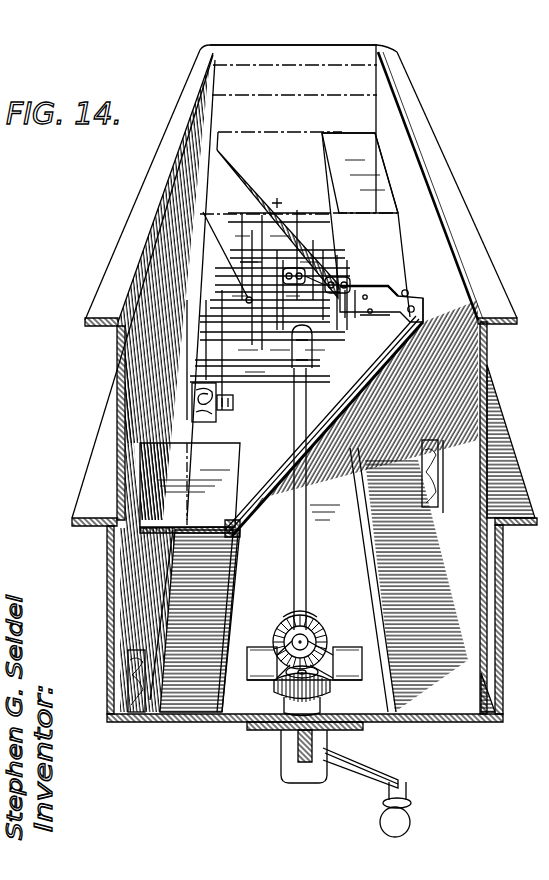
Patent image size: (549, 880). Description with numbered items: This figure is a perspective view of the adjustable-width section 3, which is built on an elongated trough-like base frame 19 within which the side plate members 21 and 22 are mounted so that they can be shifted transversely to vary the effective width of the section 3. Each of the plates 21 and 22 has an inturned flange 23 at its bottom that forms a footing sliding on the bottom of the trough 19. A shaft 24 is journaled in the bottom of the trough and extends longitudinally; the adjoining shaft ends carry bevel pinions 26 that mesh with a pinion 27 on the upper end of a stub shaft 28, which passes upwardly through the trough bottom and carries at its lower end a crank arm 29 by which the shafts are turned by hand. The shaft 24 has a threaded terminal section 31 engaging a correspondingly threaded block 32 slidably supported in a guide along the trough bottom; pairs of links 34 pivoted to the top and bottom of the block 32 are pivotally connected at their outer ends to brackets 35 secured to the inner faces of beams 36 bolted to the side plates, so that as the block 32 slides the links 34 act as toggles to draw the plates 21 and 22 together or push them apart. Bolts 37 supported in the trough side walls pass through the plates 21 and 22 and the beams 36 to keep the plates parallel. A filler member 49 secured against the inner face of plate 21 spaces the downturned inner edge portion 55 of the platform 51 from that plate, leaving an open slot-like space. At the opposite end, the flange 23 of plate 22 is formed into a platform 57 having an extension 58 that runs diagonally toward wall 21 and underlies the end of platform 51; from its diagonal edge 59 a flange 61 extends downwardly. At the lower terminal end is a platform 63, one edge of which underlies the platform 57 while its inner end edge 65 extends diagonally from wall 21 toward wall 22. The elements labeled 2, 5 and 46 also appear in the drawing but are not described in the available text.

The housing cover 2 is at (388, 72).
The section 3 is at (117, 148).
The frame plate 5 is at (205, 238).
The base frame 19 is at (377, 722).
The side plate member 21 is at (117, 360).
The side plate member 22 is at (482, 340).
The inturned flange 23 is at (185, 723).
The shaft 24 is at (297, 402).
The bevel pinion 26 is at (320, 630).
The pinion 27 is at (280, 694).
The stub shaft 28 is at (362, 660).
The crank arm 29 is at (347, 780).
The threaded terminal section 31 is at (320, 374).
The threaded block 32 is at (333, 287).
The link 34 is at (295, 257).
The bracket 35 is at (232, 307).
The beam 36 is at (200, 402).
The bolt 37 is at (263, 263).
The clamp 46 is at (278, 206).
The filler member 49 is at (140, 683).
The platform 51 is at (240, 530).
The downturned inner edge portion 55 is at (143, 648).
The platform 57 is at (358, 190).
The extension 58 is at (340, 468).
The diagonal edge 59 is at (360, 393).
The flange 61 is at (388, 483).
The platform 63 is at (287, 143).
The inner end edge 65 is at (247, 183).